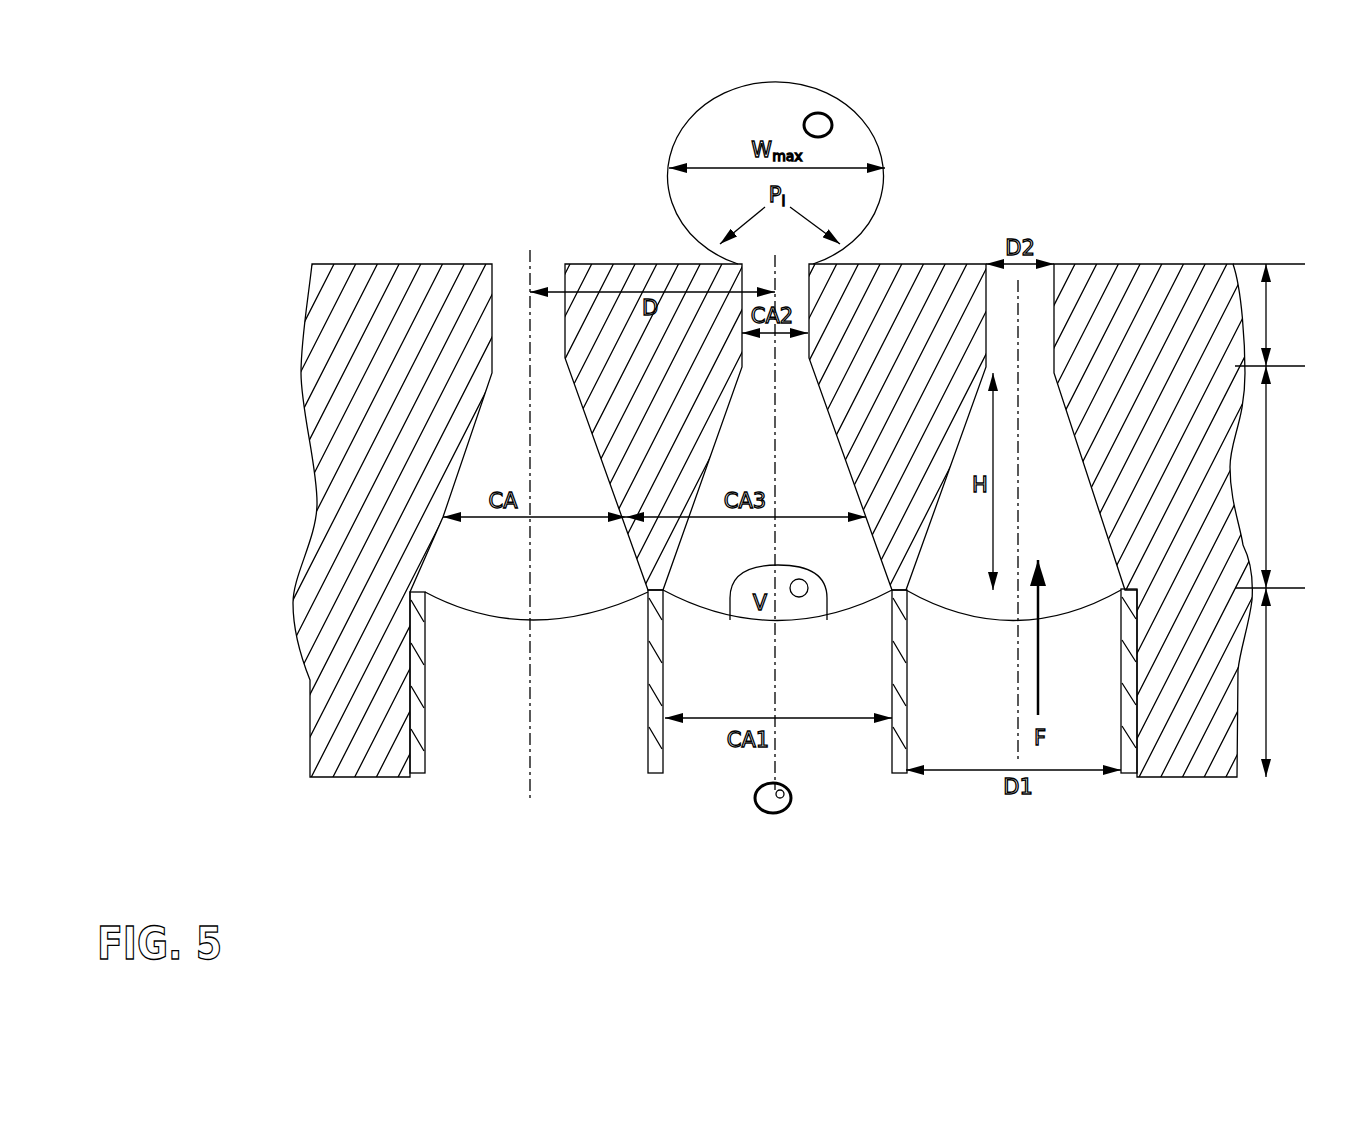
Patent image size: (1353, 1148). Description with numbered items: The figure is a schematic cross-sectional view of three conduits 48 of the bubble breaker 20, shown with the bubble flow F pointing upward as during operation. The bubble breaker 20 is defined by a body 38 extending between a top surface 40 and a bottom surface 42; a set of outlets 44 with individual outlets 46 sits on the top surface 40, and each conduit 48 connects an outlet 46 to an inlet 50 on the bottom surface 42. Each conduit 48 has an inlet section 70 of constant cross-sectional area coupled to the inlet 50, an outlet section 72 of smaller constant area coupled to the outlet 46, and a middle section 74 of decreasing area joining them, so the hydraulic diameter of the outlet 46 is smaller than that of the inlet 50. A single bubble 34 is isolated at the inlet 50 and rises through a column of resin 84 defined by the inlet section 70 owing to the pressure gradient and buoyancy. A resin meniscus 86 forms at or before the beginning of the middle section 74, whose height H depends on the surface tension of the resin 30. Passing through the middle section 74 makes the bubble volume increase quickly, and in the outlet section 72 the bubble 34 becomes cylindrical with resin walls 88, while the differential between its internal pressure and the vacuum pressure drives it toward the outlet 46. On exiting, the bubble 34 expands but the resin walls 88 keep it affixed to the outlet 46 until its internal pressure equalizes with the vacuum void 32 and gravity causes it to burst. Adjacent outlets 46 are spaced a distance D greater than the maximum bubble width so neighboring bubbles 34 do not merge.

The bubble breaker 20 is at (419, 140).
The resin 30 is at (676, 870).
The vacuum void 32 is at (1169, 92).
The bubble 34 is at (785, 93).
The body 38 is at (366, 492).
The top surface 40 is at (385, 260).
The bottom surface 42 is at (318, 782).
The set of outlets 44 is at (988, 222).
The outlet 46 is at (548, 256).
The conduit 48 is at (1042, 535).
The inlet 50 is at (481, 774).
The inlet section 70 is at (1270, 682).
The outlet section 72 is at (1269, 315).
The middle section 74 is at (1282, 477).
The column of resin 84 is at (547, 729).
The resin meniscus 86 is at (614, 625).
The resin walls 88 is at (857, 112).